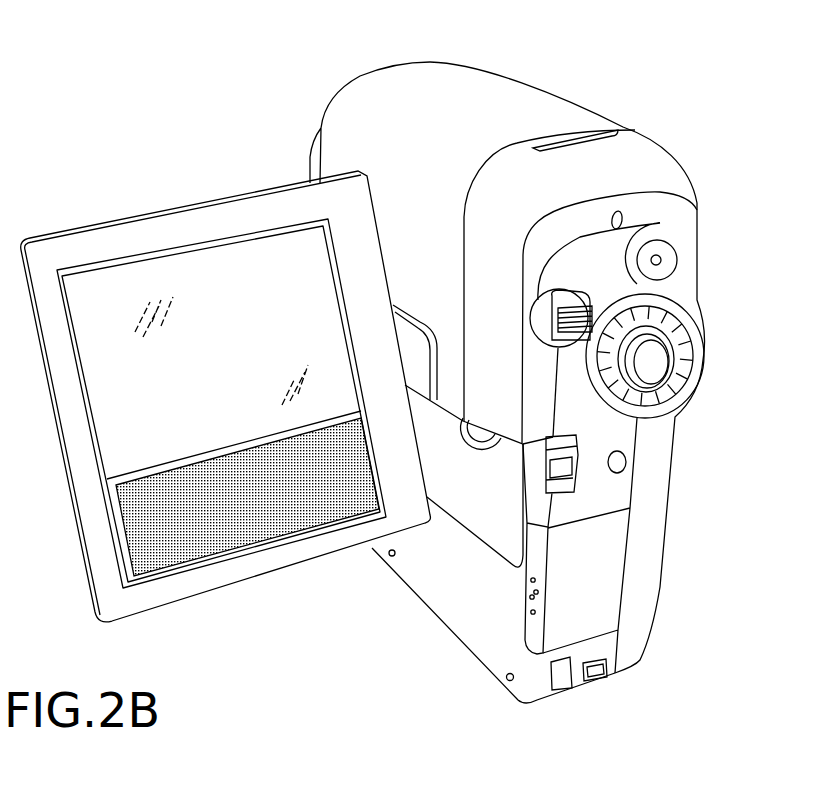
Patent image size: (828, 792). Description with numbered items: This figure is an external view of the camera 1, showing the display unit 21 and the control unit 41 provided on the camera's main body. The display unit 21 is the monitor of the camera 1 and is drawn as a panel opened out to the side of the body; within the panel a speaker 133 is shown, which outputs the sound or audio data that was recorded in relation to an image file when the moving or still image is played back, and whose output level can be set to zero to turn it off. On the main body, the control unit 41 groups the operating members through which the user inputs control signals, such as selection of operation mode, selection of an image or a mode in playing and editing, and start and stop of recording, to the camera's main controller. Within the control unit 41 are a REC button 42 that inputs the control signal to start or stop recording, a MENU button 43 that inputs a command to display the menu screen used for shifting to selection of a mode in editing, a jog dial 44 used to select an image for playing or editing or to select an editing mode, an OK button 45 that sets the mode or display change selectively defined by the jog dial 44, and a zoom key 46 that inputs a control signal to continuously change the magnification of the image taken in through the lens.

The camera 1 is at (466, 84).
The display unit 21 is at (203, 222).
The speaker 133 is at (134, 556).
The control unit 41 is at (715, 292).
The REC button 42 is at (660, 260).
The MENU button 43 is at (627, 462).
The jog dial 44 is at (684, 326).
The OK button 45 is at (657, 362).
The zoom key 46 is at (573, 313).